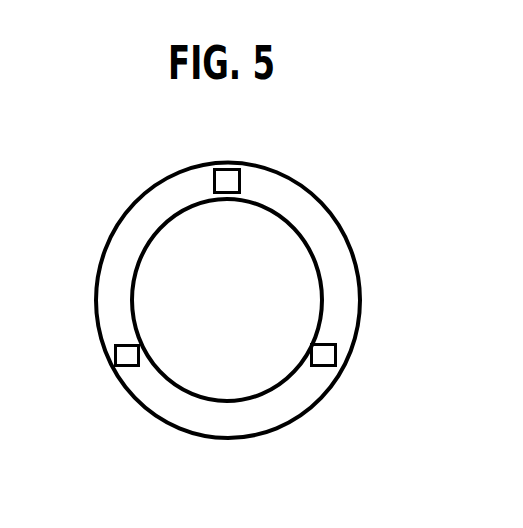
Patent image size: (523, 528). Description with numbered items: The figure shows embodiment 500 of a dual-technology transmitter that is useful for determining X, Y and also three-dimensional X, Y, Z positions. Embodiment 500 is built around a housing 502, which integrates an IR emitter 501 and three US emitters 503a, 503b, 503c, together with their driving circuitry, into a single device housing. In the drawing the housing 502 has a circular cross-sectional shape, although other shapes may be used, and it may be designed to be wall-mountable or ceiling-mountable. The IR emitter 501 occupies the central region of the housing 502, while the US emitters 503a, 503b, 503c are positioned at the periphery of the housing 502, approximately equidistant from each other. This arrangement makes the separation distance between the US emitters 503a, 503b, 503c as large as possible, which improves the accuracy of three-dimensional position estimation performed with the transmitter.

The embodiment of a dual-technology transmitter 500 is at (338, 88).
The IR emitter 501 is at (243, 316).
The housing 502 is at (332, 208).
The US emitter 503a is at (241, 177).
The US emitter 503b is at (116, 346).
The US emitter 503c is at (337, 344).